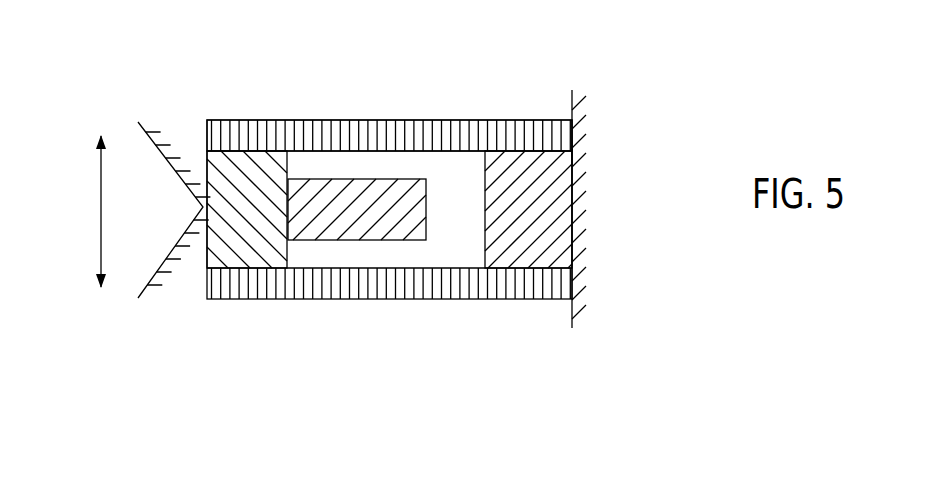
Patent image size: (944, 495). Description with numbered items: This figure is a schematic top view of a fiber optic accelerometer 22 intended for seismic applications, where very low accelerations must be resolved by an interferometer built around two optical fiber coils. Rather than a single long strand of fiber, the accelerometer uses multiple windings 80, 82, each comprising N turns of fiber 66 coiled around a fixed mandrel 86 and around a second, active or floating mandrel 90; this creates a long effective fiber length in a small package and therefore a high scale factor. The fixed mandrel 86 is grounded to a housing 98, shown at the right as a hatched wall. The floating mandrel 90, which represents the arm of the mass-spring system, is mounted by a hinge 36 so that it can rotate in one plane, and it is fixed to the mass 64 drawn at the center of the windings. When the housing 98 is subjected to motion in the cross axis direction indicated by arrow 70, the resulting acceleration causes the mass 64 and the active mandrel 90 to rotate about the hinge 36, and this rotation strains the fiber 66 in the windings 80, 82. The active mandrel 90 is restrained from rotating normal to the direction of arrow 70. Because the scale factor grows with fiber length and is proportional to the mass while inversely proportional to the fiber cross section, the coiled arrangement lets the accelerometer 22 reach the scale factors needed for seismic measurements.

The accelerometer 22 is at (578, 65).
The hinge 36 is at (207, 207).
The mass 64 is at (418, 205).
The fiber 66 is at (393, 140).
The arrow indicating cross axis direction 70 is at (98, 185).
The winding 80 is at (383, 337).
The winding 82 is at (463, 92).
The fixed mandrel 86 is at (517, 263).
The floating mandrel 90 is at (225, 258).
The housing 98 is at (582, 152).